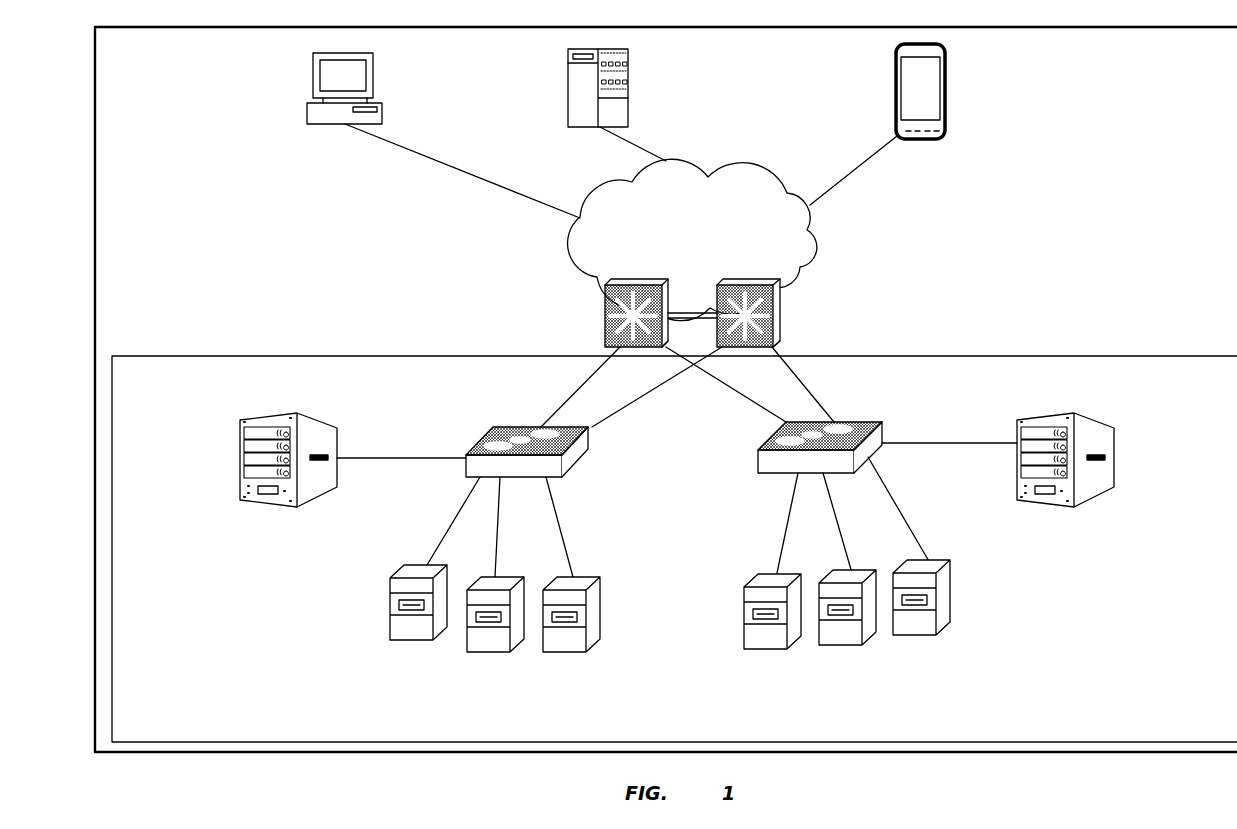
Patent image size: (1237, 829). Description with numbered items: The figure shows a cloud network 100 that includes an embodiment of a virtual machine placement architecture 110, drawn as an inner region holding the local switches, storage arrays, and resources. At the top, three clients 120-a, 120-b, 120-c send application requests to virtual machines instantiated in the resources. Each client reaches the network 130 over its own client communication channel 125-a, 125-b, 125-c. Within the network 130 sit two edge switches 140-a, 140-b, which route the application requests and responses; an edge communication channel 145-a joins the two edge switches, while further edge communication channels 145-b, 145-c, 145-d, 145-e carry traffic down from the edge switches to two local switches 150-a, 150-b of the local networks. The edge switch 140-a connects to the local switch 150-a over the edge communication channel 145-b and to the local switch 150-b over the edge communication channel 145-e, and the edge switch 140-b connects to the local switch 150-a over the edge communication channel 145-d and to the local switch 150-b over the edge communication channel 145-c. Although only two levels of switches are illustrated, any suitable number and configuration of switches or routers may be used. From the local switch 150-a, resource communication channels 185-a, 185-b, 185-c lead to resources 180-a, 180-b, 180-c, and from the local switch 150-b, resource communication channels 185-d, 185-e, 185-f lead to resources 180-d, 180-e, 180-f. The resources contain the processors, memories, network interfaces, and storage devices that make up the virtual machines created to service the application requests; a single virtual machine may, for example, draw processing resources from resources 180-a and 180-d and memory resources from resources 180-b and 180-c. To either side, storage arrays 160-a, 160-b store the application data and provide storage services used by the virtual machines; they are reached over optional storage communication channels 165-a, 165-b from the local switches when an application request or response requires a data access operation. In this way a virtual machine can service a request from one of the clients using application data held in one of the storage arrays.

The cloud network 100 is at (1225, 64).
The virtual machine (VM) placement architecture 110 is at (1230, 716).
The client 120-a is at (313, 70).
The client 120-b is at (568, 85).
The client 120-c is at (946, 92).
The client communication channel 125-a is at (457, 172).
The client communication channel 125-b is at (727, 140).
The client communication channel 125-c is at (947, 202).
The network 130 is at (710, 247).
The edge switch 140-a is at (605, 302).
The edge switch 140-b is at (780, 304).
The edge communication channel 145-a is at (690, 318).
The edge communication channel 145-b is at (577, 393).
The edge communication channel 145-c is at (900, 385).
The edge communication channel 145-d is at (660, 460).
The edge communication channel 145-e is at (758, 407).
The local switch 150-a is at (481, 439).
The local switch 150-b is at (883, 425).
The storage array 160-a is at (240, 457).
The storage array 160-b is at (1207, 495).
The storage communication channel 165-a is at (432, 510).
The storage communication channel 165-b is at (980, 497).
The resource 180-a is at (410, 640).
The resource 180-b is at (485, 652).
The resource 180-c is at (563, 652).
The resource 180-d is at (760, 649).
The resource 180-e is at (838, 645).
The resource 180-f is at (913, 636).
The resource communication channel 185-a is at (427, 553).
The resource communication channel 185-b is at (498, 527).
The resource communication channel 185-c is at (660, 545).
The resource communication channel 185-d is at (775, 562).
The resource communication channel 185-e is at (838, 523).
The resource communication channel 185-f is at (1010, 532).